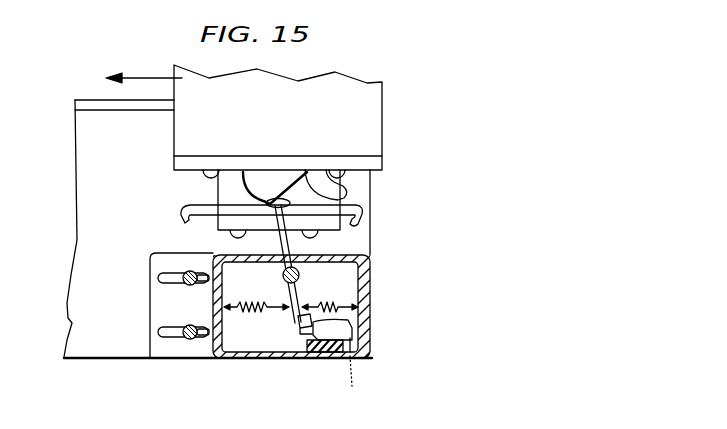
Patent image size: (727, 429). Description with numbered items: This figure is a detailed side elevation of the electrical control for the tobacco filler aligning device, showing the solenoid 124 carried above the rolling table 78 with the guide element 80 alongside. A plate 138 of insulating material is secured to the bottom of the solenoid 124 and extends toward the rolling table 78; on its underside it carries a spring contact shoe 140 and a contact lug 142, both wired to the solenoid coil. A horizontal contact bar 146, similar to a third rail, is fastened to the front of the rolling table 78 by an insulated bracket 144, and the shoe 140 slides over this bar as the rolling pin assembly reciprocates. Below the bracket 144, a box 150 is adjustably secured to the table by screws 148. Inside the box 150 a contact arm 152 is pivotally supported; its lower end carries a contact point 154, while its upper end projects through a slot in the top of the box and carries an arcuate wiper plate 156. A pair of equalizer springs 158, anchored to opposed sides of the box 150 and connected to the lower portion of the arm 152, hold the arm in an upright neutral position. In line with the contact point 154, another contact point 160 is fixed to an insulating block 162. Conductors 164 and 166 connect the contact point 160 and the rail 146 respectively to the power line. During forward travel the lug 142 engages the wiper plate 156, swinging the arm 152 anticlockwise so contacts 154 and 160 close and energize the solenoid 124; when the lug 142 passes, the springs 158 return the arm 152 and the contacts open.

The rolling table 78 is at (74, 323).
The guide rail 80 is at (77, 103).
The solenoid 124 is at (382, 121).
The plate 138 is at (382, 168).
The spring contact shoe 140 is at (350, 192).
The contact lug 142 is at (249, 171).
The insulated bracket 144 is at (216, 181).
The contact bar 146 is at (188, 212).
The screws 148 is at (183, 273).
The box 150 is at (258, 353).
The contact arm 152 is at (282, 276).
The contact point 154 is at (299, 325).
The arcuate wiper plate 156 is at (266, 203).
The equalizer springs 158 is at (232, 306).
The contact point 160 is at (337, 322).
The block 162 is at (330, 353).
The conductor 164 is at (356, 386).
The conductor 166 is at (352, 232).